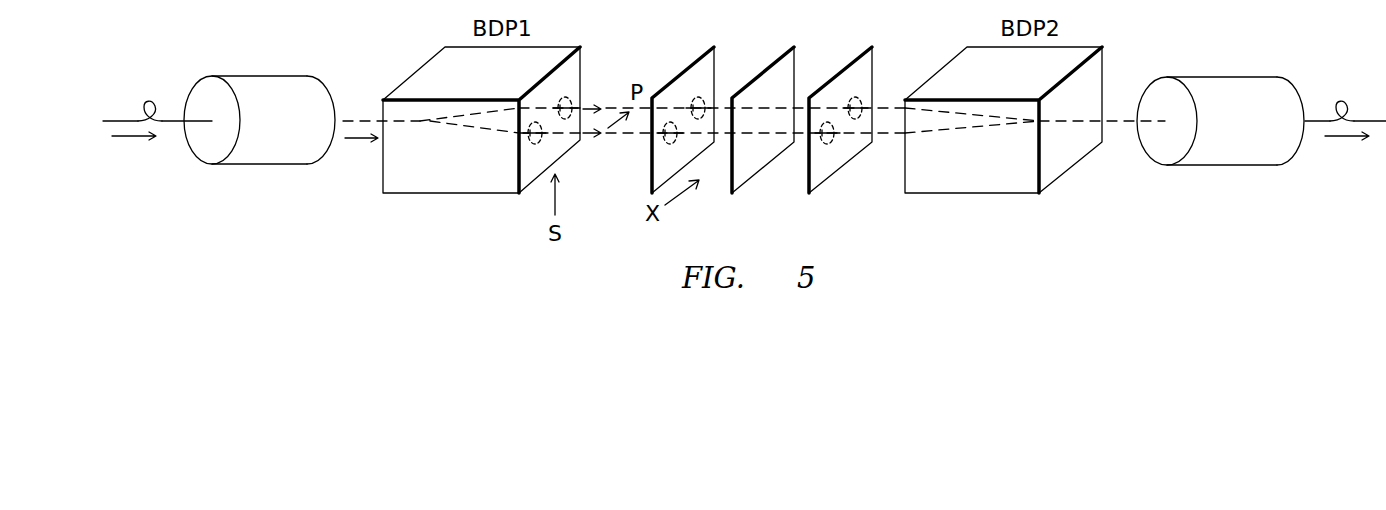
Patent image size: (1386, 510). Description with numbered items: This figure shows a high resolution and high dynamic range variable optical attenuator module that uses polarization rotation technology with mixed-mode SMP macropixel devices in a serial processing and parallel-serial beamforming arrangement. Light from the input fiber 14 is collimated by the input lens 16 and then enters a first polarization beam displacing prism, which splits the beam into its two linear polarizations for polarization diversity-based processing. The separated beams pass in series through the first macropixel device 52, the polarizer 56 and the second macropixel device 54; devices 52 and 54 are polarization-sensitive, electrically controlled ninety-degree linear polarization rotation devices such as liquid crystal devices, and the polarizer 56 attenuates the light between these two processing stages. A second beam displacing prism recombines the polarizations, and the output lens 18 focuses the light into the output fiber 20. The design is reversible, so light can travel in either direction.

The input fiber 14 is at (122, 121).
The input lens 16 is at (257, 76).
The mixed-mode SMP macropixel device 52 is at (716, 46).
The polarizer 56 is at (796, 46).
The mixed-mode SMP macropixel device 54 is at (874, 46).
The output lens 18 is at (1215, 77).
The output fiber 20 is at (1368, 121).